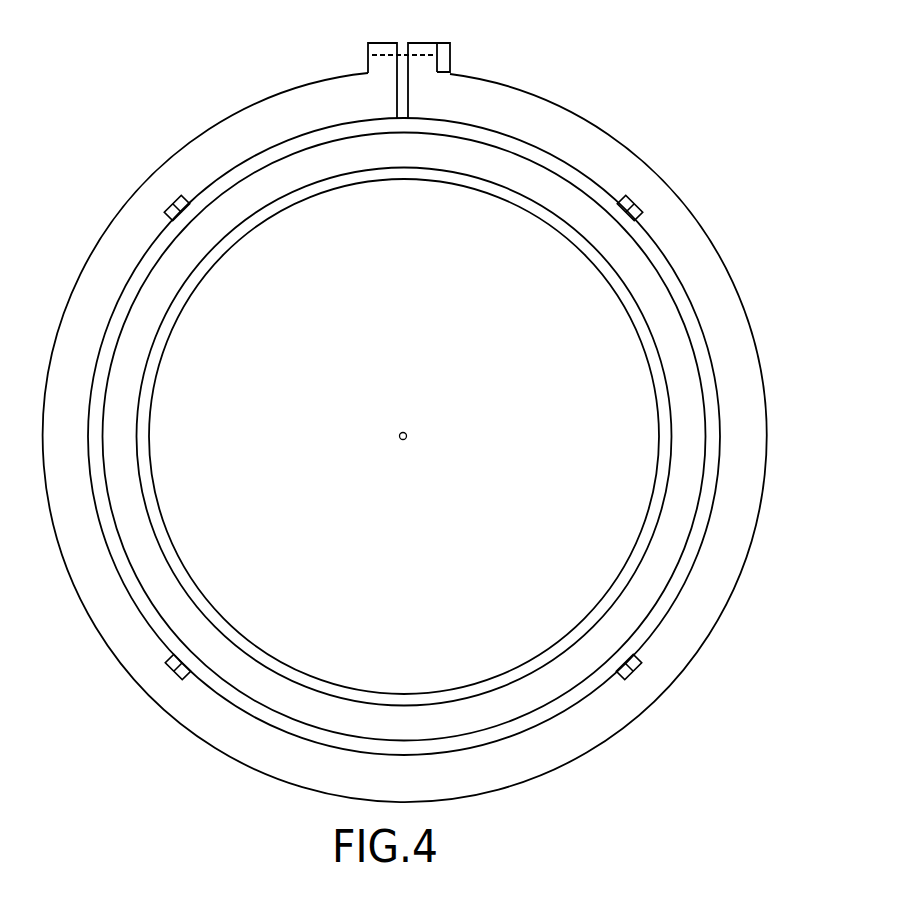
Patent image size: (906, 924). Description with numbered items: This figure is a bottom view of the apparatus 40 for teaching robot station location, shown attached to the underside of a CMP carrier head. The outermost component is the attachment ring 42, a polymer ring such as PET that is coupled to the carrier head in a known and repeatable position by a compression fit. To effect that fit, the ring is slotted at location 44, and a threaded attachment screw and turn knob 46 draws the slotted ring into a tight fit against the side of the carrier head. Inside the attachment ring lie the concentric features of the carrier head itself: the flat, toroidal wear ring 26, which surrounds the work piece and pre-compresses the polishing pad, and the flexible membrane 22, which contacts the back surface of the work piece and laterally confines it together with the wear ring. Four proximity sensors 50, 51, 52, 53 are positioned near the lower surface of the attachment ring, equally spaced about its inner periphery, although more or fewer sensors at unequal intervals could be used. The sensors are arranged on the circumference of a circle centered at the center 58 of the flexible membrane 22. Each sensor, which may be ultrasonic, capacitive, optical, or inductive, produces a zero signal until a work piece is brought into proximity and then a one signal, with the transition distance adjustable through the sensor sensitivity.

The flexible membrane 22 is at (495, 381).
The wear ring 26 is at (657, 288).
The apparatus for teaching robot station location 40 is at (623, 145).
The attachment ring 42 is at (725, 295).
The slot location 44 is at (406, 38).
The threaded attachment screw and turn knob 46 is at (440, 50).
The proximity sensor 50 is at (628, 197).
The proximity sensor 51 is at (635, 662).
The proximity sensor 52 is at (168, 665).
The proximity sensor 53 is at (183, 194).
The center of flexible work piece membrane 58 is at (406, 439).